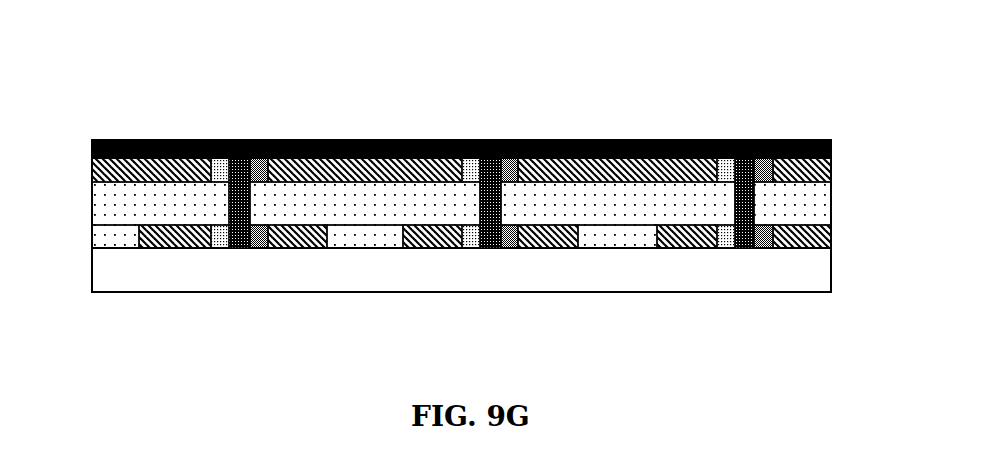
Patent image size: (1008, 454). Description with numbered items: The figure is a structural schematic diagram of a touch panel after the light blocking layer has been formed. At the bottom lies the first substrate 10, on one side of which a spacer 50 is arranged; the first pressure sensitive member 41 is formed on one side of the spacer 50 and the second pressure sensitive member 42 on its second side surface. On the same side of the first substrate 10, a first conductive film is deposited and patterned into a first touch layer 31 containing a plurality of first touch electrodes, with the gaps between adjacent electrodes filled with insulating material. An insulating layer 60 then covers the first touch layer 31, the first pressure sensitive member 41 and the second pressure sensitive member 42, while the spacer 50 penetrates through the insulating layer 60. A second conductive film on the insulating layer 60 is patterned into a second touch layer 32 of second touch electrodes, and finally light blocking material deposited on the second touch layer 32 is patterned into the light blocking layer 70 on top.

The first substrate 10 is at (461, 308).
The first touch layer 31 is at (485, 297).
The second touch layer 32 is at (461, 259).
The first pressure sensitive member 41 is at (511, 262).
The second pressure sensitive member 42 is at (473, 262).
The spacer 50 is at (491, 264).
The insulating layer 60 is at (461, 271).
The light blocking layer 70 is at (461, 89).